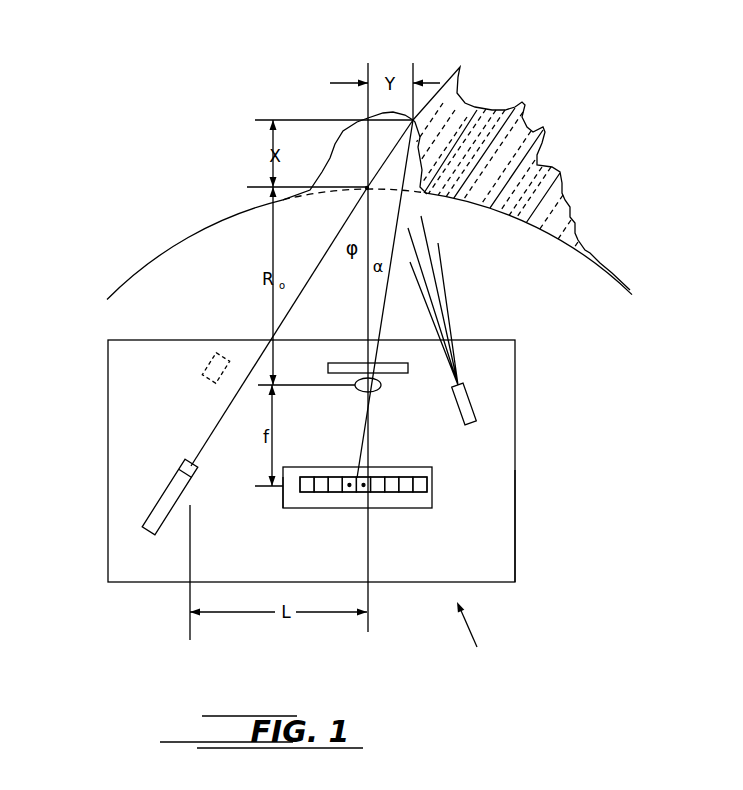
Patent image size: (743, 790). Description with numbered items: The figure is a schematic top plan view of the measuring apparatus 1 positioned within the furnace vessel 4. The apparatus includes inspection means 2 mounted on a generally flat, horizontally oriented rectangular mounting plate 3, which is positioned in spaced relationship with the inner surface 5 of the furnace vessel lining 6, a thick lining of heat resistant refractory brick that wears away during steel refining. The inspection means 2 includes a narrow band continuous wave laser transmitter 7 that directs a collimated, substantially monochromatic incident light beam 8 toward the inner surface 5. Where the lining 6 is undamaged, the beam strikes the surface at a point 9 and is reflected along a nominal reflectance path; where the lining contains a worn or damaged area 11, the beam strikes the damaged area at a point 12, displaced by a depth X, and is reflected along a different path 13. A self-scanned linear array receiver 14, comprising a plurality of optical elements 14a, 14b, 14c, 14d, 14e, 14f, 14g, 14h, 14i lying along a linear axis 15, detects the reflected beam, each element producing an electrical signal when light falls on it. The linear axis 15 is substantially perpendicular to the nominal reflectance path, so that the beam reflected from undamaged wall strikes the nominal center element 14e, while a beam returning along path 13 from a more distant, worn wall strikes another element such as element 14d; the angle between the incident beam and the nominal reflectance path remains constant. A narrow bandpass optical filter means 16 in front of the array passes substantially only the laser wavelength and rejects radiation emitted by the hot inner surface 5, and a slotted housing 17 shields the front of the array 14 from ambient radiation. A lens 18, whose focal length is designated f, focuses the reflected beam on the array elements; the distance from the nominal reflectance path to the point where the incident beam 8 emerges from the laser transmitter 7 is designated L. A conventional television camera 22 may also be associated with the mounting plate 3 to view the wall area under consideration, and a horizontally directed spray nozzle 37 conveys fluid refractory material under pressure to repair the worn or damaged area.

The measuring apparatus 1 is at (473, 629).
The inspection means 2 is at (510, 556).
The mounting plate 3 is at (515, 438).
The furnace vessel 4 is at (540, 307).
The inner surface 5 is at (493, 210).
The furnace vessel lining 6 is at (553, 180).
The laser transmitter 7 is at (168, 497).
The incident light beam 8 is at (215, 425).
The point of reflectance on undamaged lining 9 is at (367, 188).
The worn or damaged area 11 is at (332, 153).
The point of reflectance on damaged area 12 is at (413, 120).
The reflected light path from damaged area 13 is at (405, 212).
The self-scanned linear array receiver 14 is at (391, 502).
The optical element 14a is at (305, 492).
The optical element 14b is at (320, 492).
The optical element 14c is at (338, 477).
The optical element 14d is at (355, 492).
The nominal center optical element 14e is at (370, 477).
The optical element 14f is at (380, 492).
The optical element 14g is at (392, 477).
The optical element 14h is at (405, 492).
The optical element 14i is at (422, 491).
The linear axis 15 is at (302, 487).
The narrow bandpass optical filter means 16 is at (397, 363).
The slotted housing 17 is at (290, 467).
The lens 18 is at (357, 387).
The television camera 22 is at (206, 352).
The spray nozzle 37 is at (470, 400).